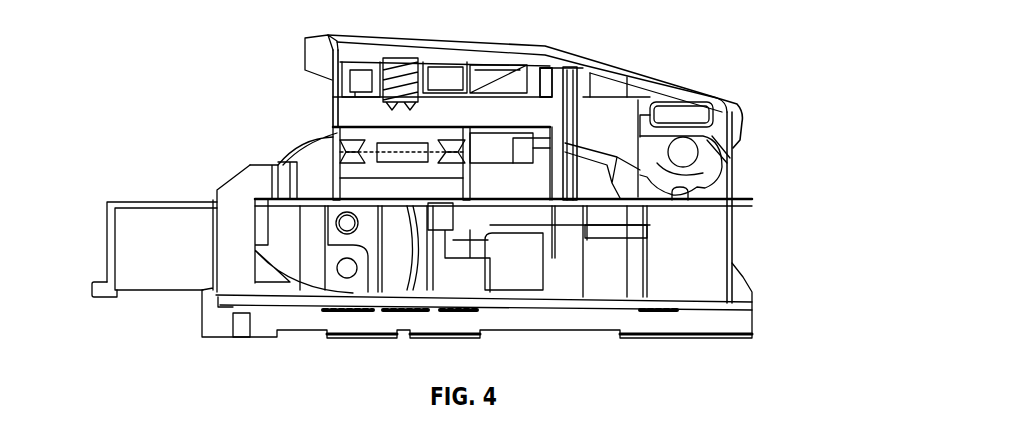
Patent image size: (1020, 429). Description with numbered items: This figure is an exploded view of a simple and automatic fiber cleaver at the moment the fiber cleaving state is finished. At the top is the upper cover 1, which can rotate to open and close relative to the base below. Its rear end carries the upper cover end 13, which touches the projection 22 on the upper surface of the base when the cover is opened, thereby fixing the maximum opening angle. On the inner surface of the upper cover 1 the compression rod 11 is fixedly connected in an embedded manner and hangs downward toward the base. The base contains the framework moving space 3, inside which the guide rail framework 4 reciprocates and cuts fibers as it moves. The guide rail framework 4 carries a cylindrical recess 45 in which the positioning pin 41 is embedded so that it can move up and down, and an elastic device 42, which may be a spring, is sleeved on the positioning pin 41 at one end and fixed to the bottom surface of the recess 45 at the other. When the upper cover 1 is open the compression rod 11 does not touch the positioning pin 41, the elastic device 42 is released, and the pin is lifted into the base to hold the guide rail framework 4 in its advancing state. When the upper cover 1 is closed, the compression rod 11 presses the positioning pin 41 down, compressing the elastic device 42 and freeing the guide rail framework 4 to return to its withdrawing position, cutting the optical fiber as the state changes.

The upper cover 1 is at (310, 70).
The compression rod 11 is at (574, 127).
The upper cover end 13 is at (728, 168).
The projection 22 is at (687, 196).
The positioning pin 41 is at (467, 206).
The recess 45 is at (488, 240).
The elastic device 42 is at (490, 258).
The framework moving space 3 is at (607, 285).
The guide rail framework 4 is at (163, 242).